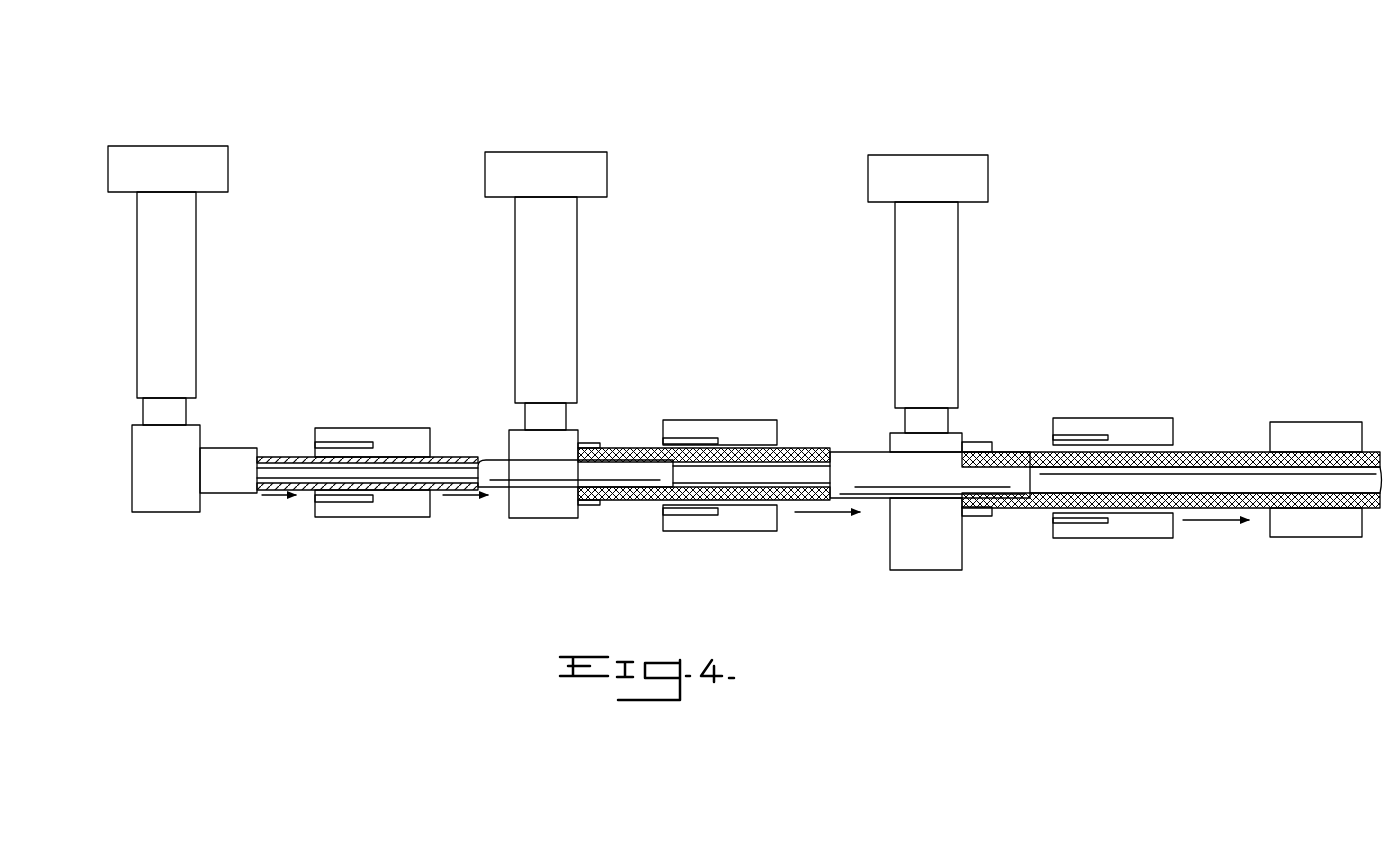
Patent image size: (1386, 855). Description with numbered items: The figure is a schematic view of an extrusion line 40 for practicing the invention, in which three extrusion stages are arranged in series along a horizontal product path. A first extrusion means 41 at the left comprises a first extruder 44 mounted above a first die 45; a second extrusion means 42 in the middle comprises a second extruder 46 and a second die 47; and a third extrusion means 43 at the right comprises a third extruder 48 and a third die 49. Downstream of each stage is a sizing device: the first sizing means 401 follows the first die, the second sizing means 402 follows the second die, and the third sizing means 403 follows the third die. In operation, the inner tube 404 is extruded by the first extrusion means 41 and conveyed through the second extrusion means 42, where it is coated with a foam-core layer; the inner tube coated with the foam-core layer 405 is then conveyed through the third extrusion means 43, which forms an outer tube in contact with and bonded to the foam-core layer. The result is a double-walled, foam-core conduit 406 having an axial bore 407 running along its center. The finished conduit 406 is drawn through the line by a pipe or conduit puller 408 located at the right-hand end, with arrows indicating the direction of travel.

The extrusion line 40 is at (742, 85).
The first extrusion means 41 is at (185, 355).
The second extrusion means 42 is at (566, 358).
The third extrusion means 43 is at (948, 367).
The first extruder 44 is at (196, 308).
The first die 45 is at (227, 493).
The second extruder 46 is at (577, 293).
The second die 47 is at (588, 506).
The third extruder 48 is at (958, 293).
The third die 49 is at (980, 516).
The first sizing means 401 is at (383, 428).
The second sizing means 402 is at (733, 420).
The third sizing means 403 is at (1130, 418).
The inner tube 404 is at (288, 455).
The inner tube coated with foam-core layer 405 is at (640, 446).
The double-walled, foam-core conduit 406 is at (1020, 450).
The axial bore 407 is at (1222, 483).
The pipe or conduit puller 408 is at (1305, 422).